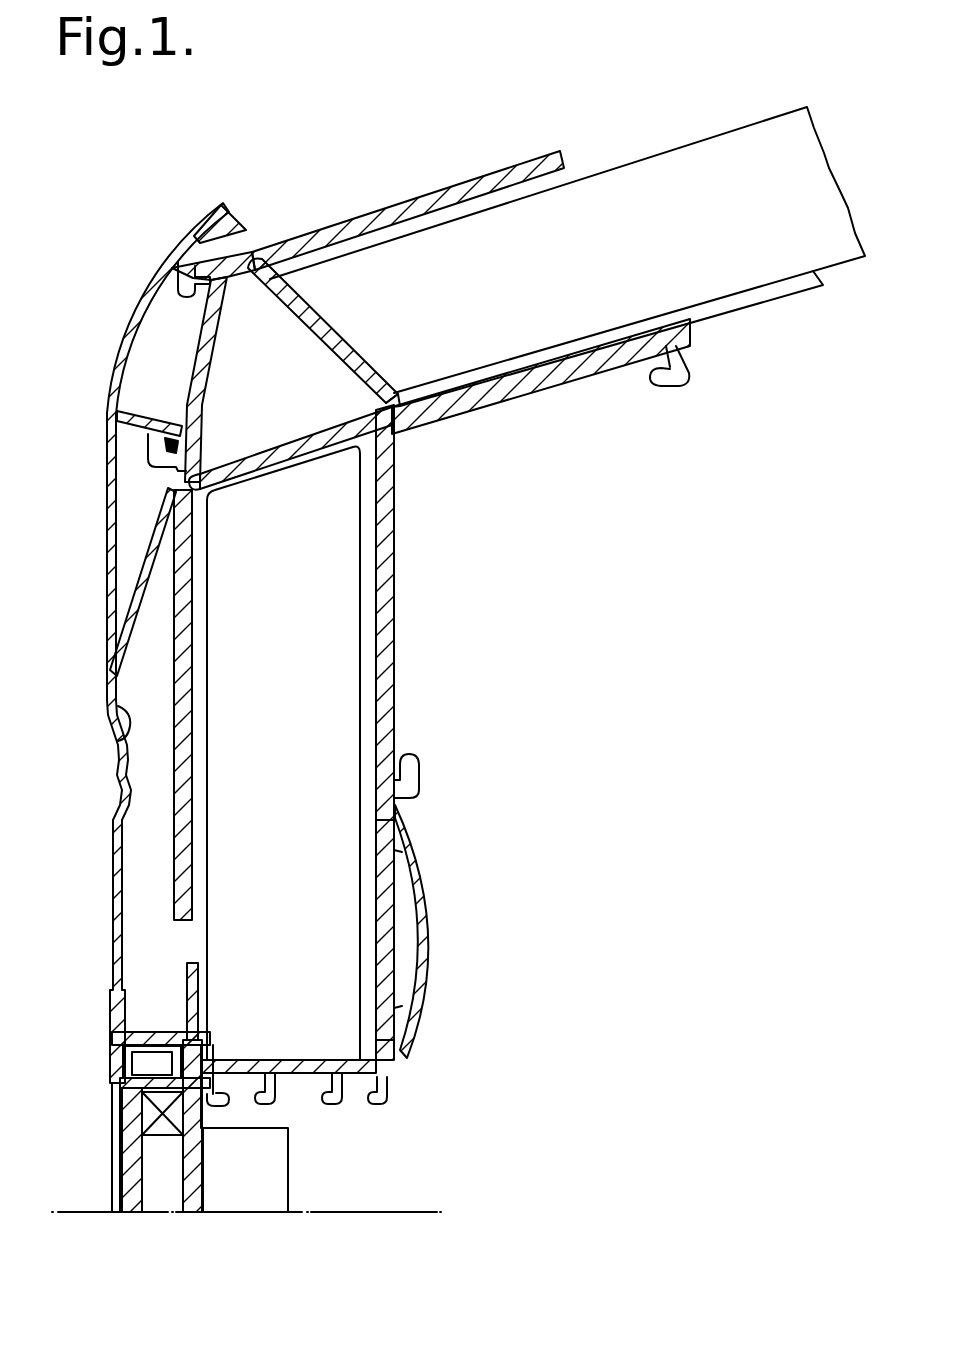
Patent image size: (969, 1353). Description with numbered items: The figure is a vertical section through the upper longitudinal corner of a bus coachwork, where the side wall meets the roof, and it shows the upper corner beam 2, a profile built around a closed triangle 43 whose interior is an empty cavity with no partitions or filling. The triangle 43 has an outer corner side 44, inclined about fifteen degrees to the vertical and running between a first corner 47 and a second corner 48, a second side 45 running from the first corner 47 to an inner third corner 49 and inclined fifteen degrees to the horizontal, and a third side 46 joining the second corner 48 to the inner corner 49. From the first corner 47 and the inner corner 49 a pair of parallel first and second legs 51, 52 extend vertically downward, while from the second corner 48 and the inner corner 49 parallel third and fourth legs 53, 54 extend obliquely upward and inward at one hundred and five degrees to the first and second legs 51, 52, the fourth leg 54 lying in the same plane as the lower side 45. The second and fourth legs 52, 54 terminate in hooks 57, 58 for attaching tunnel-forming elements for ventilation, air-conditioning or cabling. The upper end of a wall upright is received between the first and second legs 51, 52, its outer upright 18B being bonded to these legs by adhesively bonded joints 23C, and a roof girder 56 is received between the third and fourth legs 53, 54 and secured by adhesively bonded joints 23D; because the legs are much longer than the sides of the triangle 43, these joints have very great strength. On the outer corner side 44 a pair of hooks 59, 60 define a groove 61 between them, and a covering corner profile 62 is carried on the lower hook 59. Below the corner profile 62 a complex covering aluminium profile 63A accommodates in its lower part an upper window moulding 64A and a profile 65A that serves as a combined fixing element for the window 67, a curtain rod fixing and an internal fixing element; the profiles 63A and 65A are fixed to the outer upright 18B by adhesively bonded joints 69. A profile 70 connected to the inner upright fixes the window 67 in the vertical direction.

The upper corner beam 2 is at (358, 190).
The outer upright 18B is at (385, 928).
The adhesively bonded joints 23C is at (190, 812).
The adhesively bonded joints 23D is at (491, 193).
The closed triangle 43 is at (285, 370).
The outer corner side 44 is at (202, 393).
The second side 45 is at (284, 441).
The third side 46 is at (308, 330).
The first corner 47 is at (201, 464).
The second corner 48 is at (228, 268).
The inner corner 49 is at (394, 430).
The first leg 51 is at (190, 712).
The second leg 52 is at (395, 627).
The third leg 53 is at (481, 185).
The fourth leg 54 is at (570, 372).
The roof girders 56 is at (666, 131).
The hook 57 is at (415, 762).
The hook 58 is at (658, 378).
The hook 59 is at (167, 266).
The hook 60 is at (152, 440).
The groove 61 is at (172, 374).
The covering corner profile 62 is at (130, 352).
The covering aluminium profile 63A is at (120, 804).
The upper window moulding 64A is at (112, 1008).
The profile 65A is at (422, 990).
The window 67 is at (132, 1172).
The adhesively bonded joints 69 is at (380, 828).
The profile 70 is at (290, 1180).